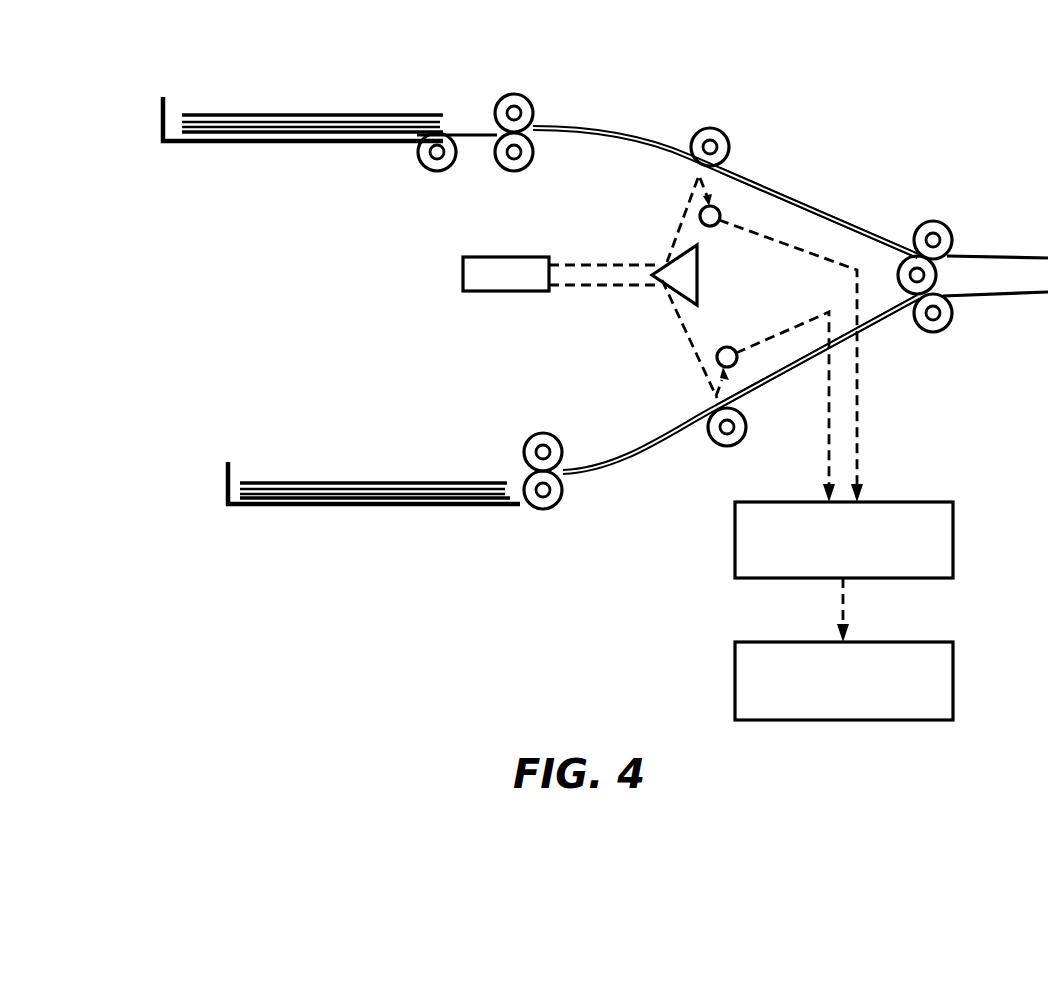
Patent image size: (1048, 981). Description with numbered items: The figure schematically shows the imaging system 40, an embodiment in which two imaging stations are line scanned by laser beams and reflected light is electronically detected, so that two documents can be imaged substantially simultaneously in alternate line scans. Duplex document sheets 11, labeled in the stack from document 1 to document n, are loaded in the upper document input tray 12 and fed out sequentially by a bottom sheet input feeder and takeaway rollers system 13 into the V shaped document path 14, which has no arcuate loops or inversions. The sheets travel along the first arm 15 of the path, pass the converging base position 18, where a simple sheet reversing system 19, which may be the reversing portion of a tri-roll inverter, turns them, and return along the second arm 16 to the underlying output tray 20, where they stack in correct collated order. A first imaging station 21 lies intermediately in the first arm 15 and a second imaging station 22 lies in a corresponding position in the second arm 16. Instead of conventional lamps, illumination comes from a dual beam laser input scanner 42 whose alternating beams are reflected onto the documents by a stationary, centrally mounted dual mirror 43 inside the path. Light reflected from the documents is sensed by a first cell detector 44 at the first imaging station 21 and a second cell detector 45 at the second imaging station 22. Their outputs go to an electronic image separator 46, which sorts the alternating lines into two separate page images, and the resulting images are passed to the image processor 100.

The imaging system 40 is at (783, 86).
The duplex document sheets 11 is at (313, 115).
The document input tray 12 is at (247, 143).
The bottom sheet input feeder and takeaway rollers system 13 is at (452, 170).
The V shaped document path 14 is at (642, 142).
The first arm 15 is at (812, 204).
The second arm 16 is at (772, 372).
The base position 18 is at (907, 229).
The sheet reversing system 19 is at (940, 277).
The output tray 20 is at (375, 506).
The first imaging station 21 is at (684, 173).
The second imaging station 22 is at (694, 399).
The dual beam laser input scanner 42 is at (508, 292).
The dual mirror 43 is at (698, 277).
The first cell detector 44 is at (718, 210).
The second cell detector 45 is at (733, 347).
The electronic image separator 46 is at (953, 543).
The image processor 100 is at (953, 682).
The document n is at (447, 123).
The document 1 is at (373, 153).